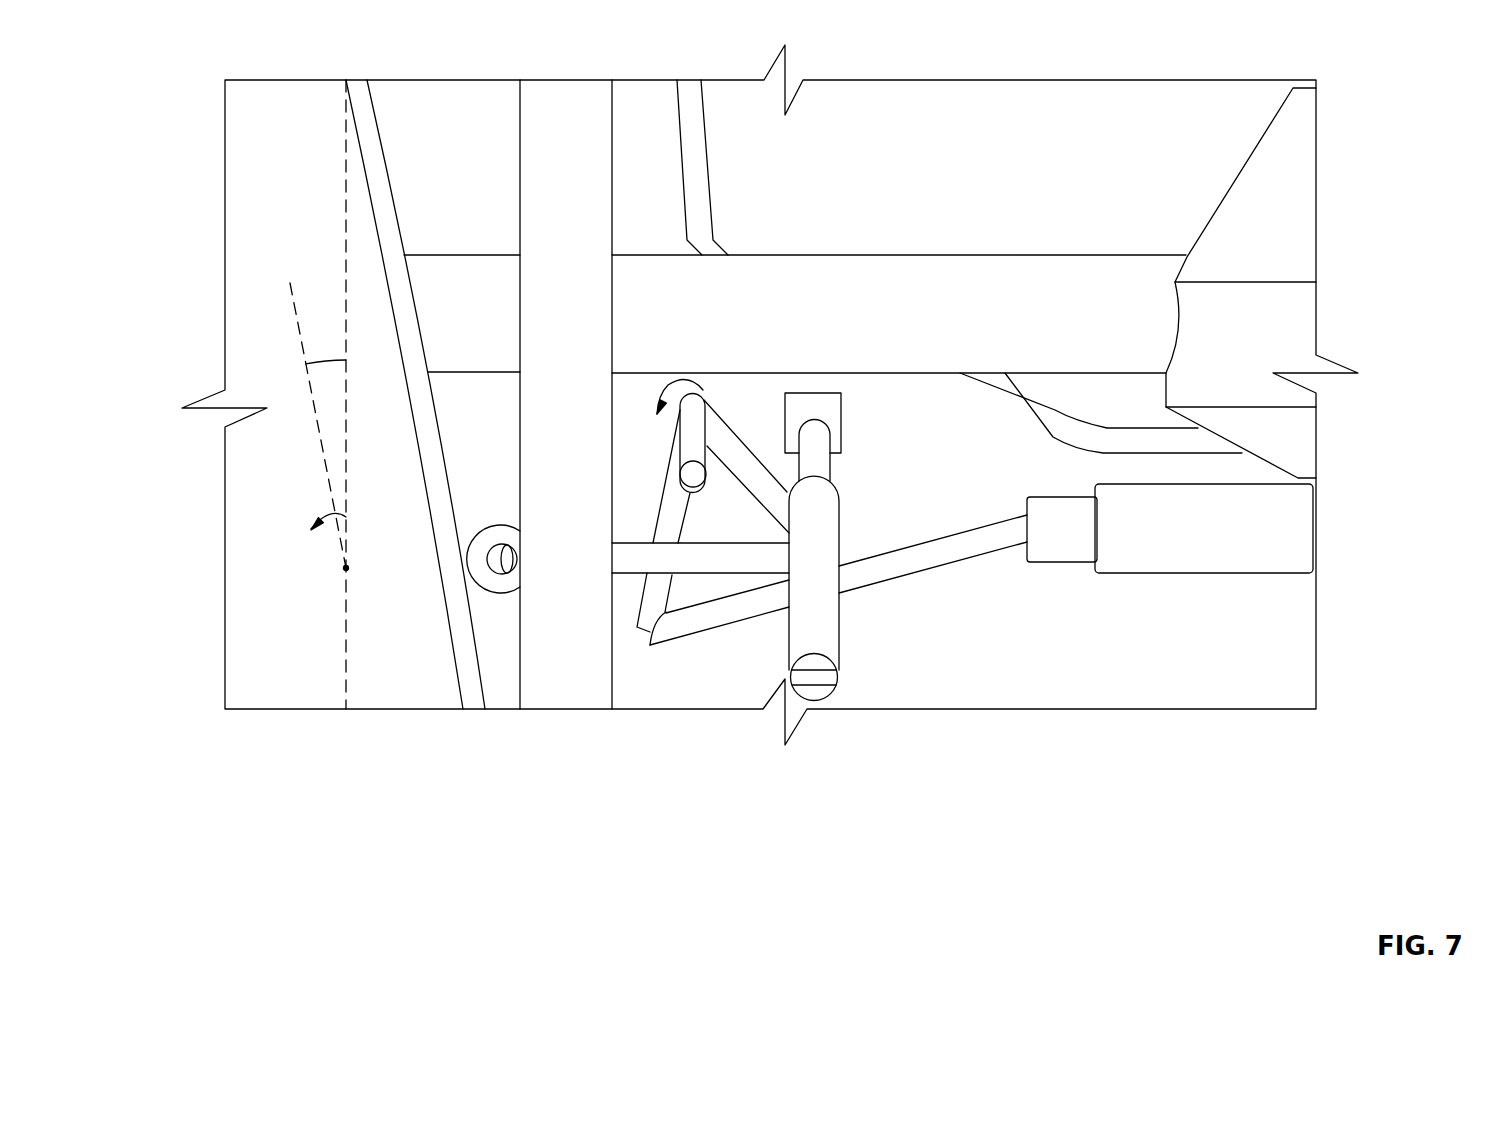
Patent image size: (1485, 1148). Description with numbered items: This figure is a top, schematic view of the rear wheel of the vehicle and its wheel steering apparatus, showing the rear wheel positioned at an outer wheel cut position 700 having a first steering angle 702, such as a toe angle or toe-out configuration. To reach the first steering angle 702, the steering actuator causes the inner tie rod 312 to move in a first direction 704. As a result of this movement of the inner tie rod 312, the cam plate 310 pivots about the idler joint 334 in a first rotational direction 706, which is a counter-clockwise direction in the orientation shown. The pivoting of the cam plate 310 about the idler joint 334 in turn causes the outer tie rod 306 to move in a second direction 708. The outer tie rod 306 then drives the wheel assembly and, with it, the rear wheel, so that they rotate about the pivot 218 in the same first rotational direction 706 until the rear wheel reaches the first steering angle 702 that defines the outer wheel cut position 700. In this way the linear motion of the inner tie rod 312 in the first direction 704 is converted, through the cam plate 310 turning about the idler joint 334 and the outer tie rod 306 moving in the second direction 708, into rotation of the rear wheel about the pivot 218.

The outer wheel cut position 700 is at (190, 135).
The first steering angle 702 is at (327, 358).
The first direction 704 is at (1304, 773).
The first rotational direction 706 is at (333, 513).
The second direction 708 is at (1244, 110).
The pivot 218 is at (344, 569).
The outer tie rod 306 is at (655, 557).
The cam plate 310 is at (743, 465).
The inner tie rod 312 is at (927, 571).
The idler joint 334 is at (692, 414).